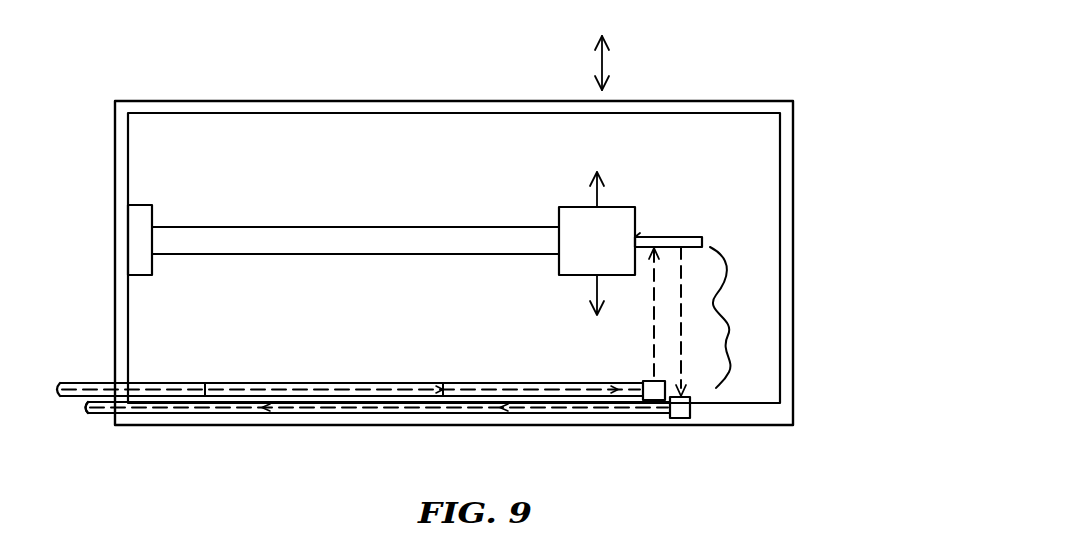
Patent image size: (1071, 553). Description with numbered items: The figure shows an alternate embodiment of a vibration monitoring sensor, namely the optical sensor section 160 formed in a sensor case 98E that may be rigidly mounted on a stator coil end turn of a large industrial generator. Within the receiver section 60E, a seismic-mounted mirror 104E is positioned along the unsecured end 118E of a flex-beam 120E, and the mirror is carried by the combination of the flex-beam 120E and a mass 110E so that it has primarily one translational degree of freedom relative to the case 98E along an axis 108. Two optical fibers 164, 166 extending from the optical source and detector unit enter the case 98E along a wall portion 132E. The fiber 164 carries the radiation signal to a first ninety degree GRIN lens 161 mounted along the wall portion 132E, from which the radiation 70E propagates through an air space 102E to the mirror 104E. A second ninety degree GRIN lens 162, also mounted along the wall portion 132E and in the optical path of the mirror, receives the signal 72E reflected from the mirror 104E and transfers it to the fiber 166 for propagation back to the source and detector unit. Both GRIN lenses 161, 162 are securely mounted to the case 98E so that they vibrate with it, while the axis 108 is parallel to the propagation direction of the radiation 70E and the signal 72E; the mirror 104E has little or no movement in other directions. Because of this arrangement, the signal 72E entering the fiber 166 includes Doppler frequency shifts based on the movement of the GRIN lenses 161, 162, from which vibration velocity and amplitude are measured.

The receiver section 60E is at (204, 95).
The optical sensor section 160 is at (353, 74).
The sensor case 98E is at (707, 102).
The axis 108 is at (598, 62).
The mass 110E is at (577, 206).
The flex-beam 120E is at (333, 227).
The unsecured end 118E is at (636, 237).
The seismic-mounted mirror 104E is at (702, 242).
The air space 102E is at (737, 318).
The wall portion 132E is at (735, 398).
The radiation 70E is at (653, 334).
The signal 72E is at (680, 365).
The optical fiber 164 is at (181, 384).
The optical fiber 166 is at (100, 414).
The first 90 degree GRIN lens 161 is at (653, 402).
The second 90 degree GRIN lens 162 is at (680, 419).